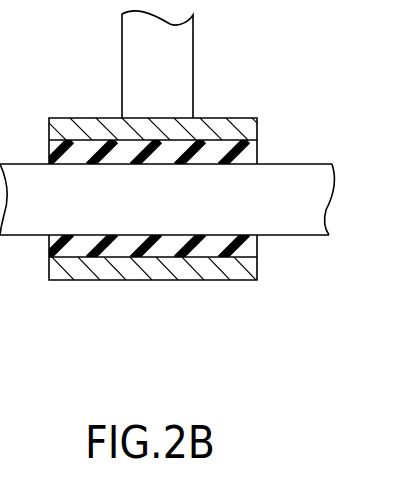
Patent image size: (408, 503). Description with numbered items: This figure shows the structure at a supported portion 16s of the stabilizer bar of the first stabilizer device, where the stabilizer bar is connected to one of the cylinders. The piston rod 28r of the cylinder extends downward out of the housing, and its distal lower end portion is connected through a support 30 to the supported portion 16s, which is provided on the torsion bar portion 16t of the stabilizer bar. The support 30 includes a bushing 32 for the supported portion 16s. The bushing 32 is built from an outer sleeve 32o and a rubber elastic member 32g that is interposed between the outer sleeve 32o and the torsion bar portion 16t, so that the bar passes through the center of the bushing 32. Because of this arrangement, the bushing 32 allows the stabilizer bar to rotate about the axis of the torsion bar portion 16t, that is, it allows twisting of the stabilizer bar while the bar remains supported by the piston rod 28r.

The torsion bar portion 16t is at (312, 220).
The supported portion 16s is at (217, 245).
The piston rod 28r is at (193, 60).
The support 30 is at (308, 65).
The bushing 32 is at (176, 199).
The outer sleeve 32o is at (72, 118).
The rubber elastic member 32g is at (72, 247).